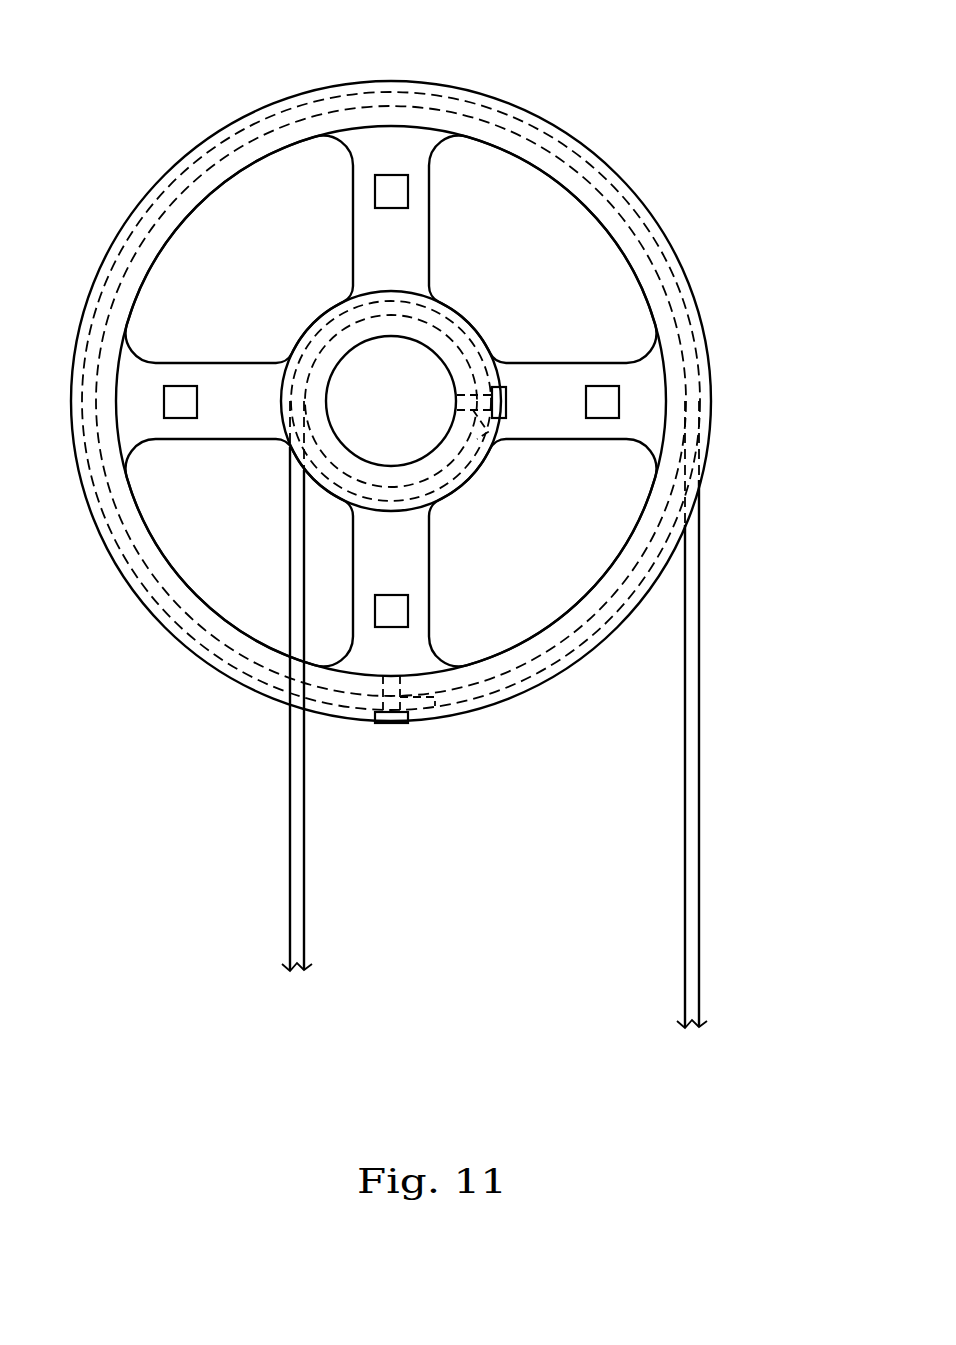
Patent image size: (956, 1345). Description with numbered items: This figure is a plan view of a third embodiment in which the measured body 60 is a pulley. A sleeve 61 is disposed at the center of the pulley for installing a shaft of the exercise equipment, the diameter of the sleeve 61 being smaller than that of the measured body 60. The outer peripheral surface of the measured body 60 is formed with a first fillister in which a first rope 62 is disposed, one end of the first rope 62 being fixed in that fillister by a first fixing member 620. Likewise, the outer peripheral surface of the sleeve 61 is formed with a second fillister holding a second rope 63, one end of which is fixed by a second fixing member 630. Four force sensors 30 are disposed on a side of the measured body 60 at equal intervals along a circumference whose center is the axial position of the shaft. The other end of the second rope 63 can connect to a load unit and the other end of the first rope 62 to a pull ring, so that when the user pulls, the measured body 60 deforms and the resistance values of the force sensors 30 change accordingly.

The force sensor 30 is at (396, 193).
The measured body 60 is at (410, 98).
The sleeve 61 is at (467, 468).
The first rope 62 is at (693, 818).
The second rope 63 is at (298, 883).
The first fixing member 620 is at (392, 723).
The second fixing member 630 is at (506, 400).